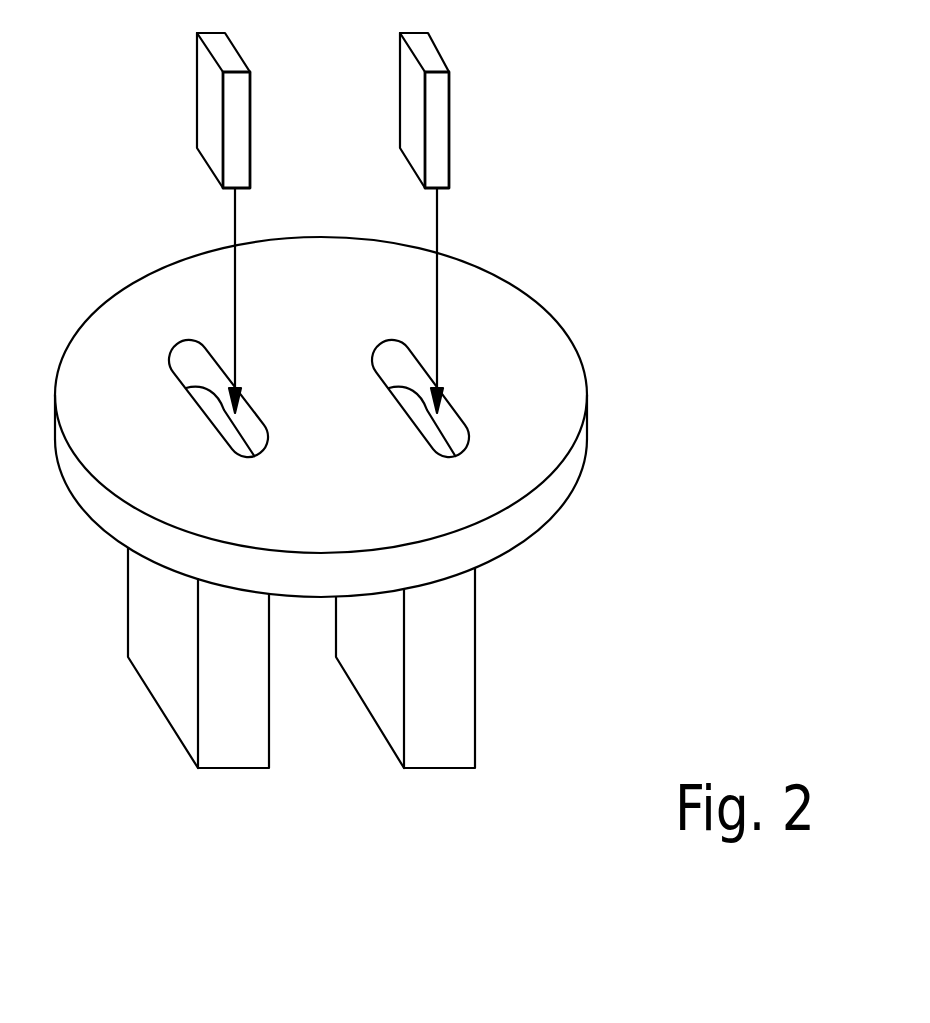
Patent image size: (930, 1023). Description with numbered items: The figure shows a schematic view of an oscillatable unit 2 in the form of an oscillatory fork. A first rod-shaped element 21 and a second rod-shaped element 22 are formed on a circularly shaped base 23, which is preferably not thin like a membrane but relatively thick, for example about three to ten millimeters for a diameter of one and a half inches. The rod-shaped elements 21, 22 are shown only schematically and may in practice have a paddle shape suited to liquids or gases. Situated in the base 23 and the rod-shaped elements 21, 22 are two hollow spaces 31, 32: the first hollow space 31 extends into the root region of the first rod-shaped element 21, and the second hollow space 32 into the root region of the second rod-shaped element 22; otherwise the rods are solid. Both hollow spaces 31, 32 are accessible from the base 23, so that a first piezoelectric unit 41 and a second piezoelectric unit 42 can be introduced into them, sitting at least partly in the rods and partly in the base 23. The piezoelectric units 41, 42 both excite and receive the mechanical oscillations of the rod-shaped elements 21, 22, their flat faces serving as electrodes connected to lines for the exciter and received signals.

The oscillatable unit 2 is at (377, 565).
The first rod-shaped element 21 is at (228, 750).
The second rod-shaped element 22 is at (443, 750).
The base 23 is at (547, 408).
The first hollow space 31 is at (197, 360).
The second hollow space 32 is at (395, 360).
The first piezoelectric unit 41 is at (205, 103).
The second piezoelectric unit 42 is at (440, 103).